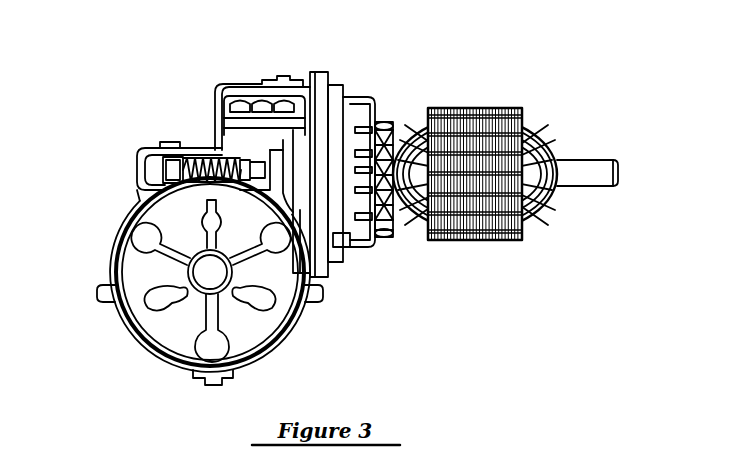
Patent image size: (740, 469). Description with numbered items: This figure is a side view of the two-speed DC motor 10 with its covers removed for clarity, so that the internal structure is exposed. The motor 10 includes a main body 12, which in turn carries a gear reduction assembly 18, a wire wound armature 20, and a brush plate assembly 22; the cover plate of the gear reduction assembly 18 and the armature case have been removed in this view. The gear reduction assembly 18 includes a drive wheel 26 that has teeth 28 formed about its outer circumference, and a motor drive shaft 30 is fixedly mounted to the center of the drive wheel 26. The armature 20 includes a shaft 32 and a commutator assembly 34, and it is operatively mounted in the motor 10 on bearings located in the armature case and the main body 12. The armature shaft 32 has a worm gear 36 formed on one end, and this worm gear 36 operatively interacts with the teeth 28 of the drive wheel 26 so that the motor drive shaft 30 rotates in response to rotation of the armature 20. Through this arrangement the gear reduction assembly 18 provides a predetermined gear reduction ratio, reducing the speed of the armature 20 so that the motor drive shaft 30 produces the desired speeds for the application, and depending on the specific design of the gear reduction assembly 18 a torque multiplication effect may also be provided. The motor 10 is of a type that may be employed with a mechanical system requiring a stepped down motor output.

The two-speed DC motor 10 is at (186, 84).
The main body 12 is at (320, 72).
The gear reduction assembly 18 is at (100, 222).
The wire wound armature 20 is at (477, 108).
The brush plate assembly 22 is at (382, 245).
The drive wheel 26 is at (143, 300).
The teeth 28 is at (157, 205).
The motor drive shaft 30 is at (235, 270).
The armature shaft 32 is at (597, 158).
The commutator assembly 34 is at (396, 150).
The worm gear 36 is at (193, 152).